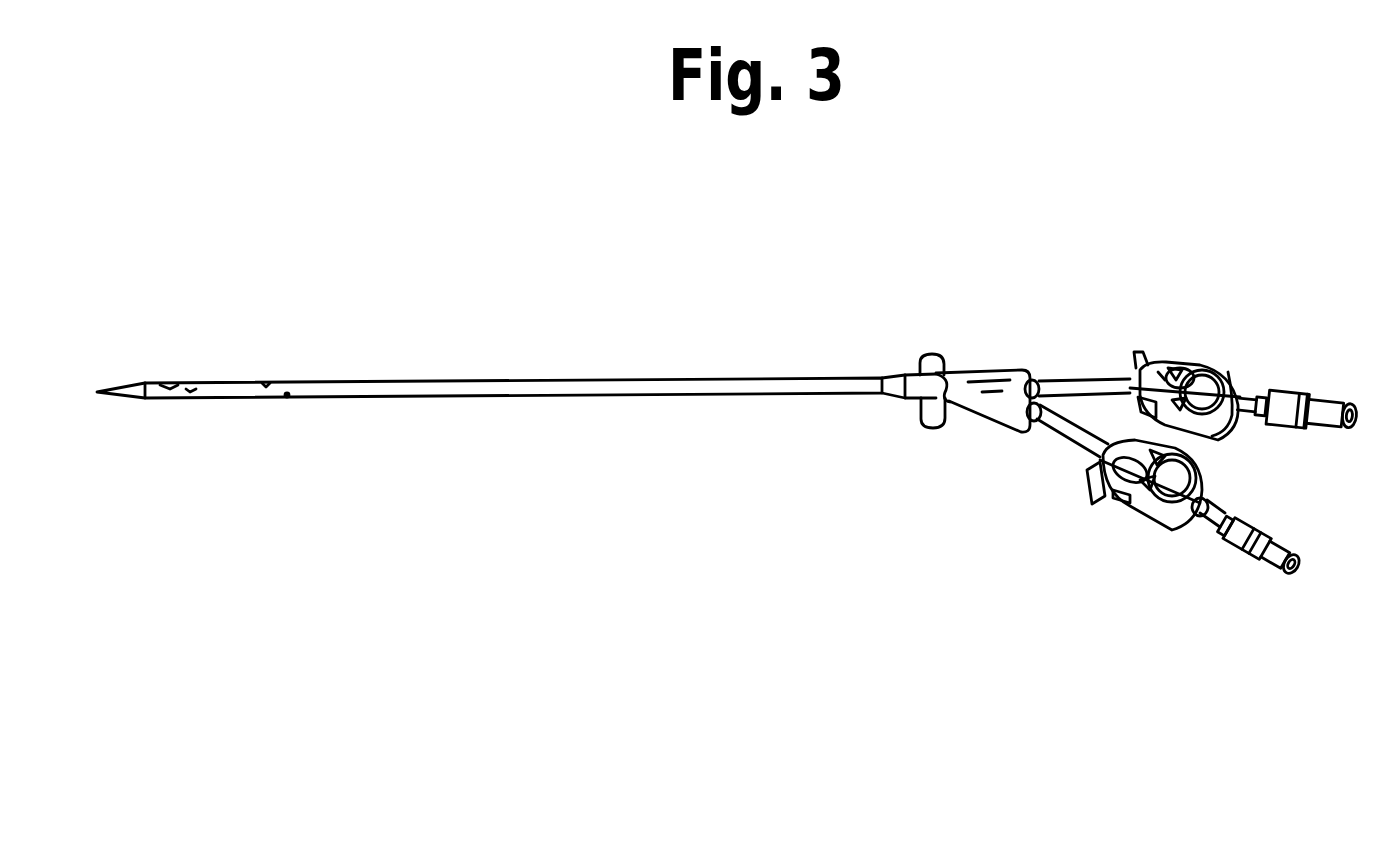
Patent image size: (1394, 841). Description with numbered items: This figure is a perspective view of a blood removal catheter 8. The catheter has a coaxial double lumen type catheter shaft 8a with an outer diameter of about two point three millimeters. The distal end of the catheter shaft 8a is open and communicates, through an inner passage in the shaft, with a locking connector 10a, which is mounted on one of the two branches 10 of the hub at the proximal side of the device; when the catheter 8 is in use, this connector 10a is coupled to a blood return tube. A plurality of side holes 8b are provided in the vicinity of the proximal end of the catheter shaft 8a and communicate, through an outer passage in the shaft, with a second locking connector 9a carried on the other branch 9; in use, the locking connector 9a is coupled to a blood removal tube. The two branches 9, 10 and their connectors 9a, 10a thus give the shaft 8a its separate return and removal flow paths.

The blood removal catheter 8 is at (650, 340).
The catheter shaft 8a is at (440, 384).
The side holes 8b is at (190, 390).
The lower stopcock 9 is at (1130, 512).
The locking connector 9a is at (1290, 575).
The upper stopcock 10 is at (1172, 360).
The locking connector 10a is at (1352, 390).